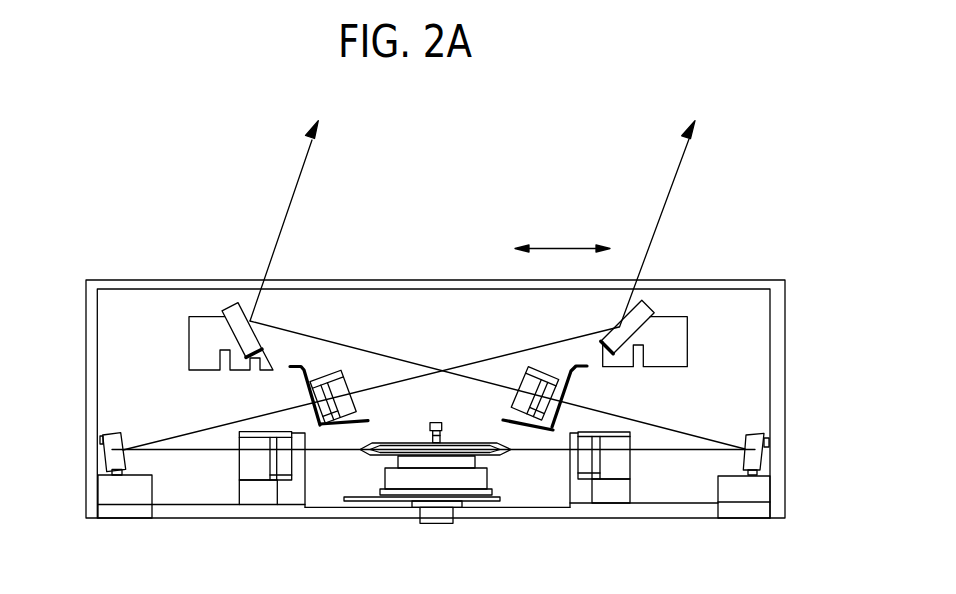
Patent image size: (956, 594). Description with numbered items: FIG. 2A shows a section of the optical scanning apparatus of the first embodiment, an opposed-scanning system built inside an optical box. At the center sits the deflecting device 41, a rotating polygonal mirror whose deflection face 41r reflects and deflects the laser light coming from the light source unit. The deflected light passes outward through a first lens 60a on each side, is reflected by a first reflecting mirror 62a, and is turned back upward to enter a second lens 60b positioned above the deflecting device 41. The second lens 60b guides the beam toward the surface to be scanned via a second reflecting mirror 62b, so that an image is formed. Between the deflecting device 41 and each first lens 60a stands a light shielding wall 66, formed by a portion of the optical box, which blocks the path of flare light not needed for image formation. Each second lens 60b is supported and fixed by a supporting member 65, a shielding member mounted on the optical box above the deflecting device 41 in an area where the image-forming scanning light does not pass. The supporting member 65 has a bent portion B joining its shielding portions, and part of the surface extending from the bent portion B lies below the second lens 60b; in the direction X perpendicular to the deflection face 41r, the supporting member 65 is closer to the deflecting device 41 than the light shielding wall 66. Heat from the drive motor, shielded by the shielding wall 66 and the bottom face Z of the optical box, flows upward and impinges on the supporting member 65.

The deflecting device 41 is at (427, 478).
The deflection face 41r is at (364, 444).
The first lens 60a is at (245, 461).
The second lens 60b is at (340, 383).
The first reflecting mirror 62a is at (112, 449).
The second reflecting mirror 62b is at (232, 307).
The supporting member 65 is at (588, 366).
The light shielding wall 66 is at (307, 470).
The bent portion B is at (321, 430).
The direction X is at (562, 235).
The bottom face of the optical box Z is at (257, 519).